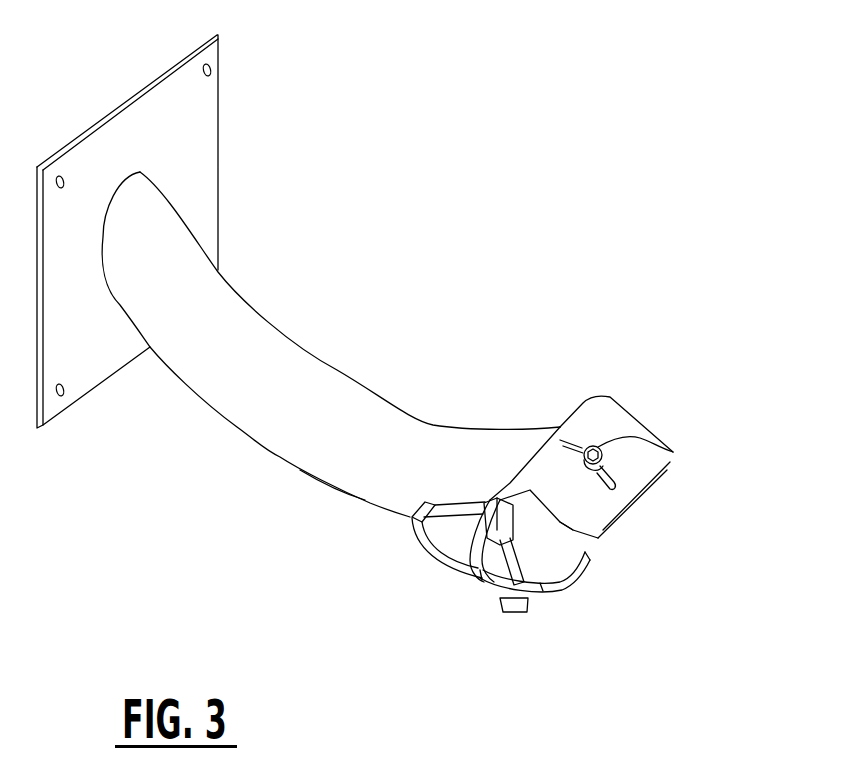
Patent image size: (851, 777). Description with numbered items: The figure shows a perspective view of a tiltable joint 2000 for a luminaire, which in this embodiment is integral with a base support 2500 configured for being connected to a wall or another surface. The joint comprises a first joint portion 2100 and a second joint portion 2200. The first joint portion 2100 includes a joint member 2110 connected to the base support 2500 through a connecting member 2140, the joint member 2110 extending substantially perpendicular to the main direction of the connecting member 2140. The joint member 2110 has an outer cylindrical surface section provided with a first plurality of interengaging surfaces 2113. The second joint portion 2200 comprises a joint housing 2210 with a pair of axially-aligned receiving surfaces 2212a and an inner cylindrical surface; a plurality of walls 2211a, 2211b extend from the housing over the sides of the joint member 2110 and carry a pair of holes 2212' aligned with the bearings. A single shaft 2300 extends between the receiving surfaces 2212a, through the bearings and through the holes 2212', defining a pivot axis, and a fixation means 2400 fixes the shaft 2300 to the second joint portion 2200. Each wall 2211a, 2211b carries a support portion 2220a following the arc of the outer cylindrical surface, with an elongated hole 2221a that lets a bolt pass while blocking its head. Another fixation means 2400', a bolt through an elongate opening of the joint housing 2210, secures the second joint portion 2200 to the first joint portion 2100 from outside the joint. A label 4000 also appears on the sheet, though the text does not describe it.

The tiltable joint 2000 is at (612, 227).
The base support 2500 is at (193, 123).
The first joint portion 2100 is at (310, 312).
The connecting member 2140 is at (330, 485).
The joint member 2110 is at (415, 560).
The first plurality of interengaging surfaces 2113 is at (450, 565).
The shaft 2300 is at (465, 567).
The fixation means 2400 is at (493, 625).
The second joint portion 2200 is at (675, 412).
The wall 2211b is at (623, 398).
The wall 2211a is at (533, 478).
The holes 2212' is at (516, 447).
The joint housing 2210 is at (667, 470).
The axially-aligned receiving surfaces 2212a is at (545, 548).
The support portion 2220a is at (567, 572).
The elongated hole 2221a is at (540, 582).
The another fixation means 2400' is at (680, 453).
The display device 4000 is at (779, 762).